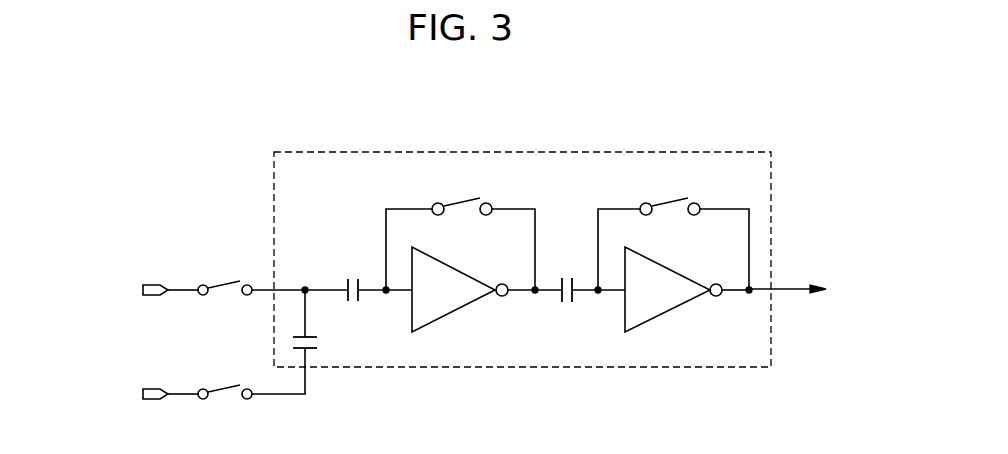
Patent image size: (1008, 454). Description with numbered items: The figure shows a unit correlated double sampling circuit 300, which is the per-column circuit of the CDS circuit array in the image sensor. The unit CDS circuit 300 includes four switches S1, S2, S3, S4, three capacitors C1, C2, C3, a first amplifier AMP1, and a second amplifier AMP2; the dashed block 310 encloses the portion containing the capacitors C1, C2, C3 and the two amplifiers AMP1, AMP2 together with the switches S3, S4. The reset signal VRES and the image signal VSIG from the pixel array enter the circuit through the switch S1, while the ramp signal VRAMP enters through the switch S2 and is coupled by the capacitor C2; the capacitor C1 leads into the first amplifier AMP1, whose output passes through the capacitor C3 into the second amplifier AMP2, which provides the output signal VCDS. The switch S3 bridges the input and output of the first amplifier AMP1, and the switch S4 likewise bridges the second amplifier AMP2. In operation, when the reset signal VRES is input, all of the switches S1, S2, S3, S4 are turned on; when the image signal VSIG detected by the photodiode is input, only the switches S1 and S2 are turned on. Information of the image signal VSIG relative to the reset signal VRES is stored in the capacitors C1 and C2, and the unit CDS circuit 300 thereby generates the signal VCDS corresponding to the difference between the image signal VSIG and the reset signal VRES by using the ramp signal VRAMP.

The unit CDS circuit 300 is at (887, 146).
The amplifier and sampling block 310 is at (520, 152).
The switch S1 is at (225, 274).
The switch S2 is at (225, 379).
The switch S3 is at (462, 194).
The switch S4 is at (670, 194).
The capacitor C1 is at (356, 277).
The capacitor C2 is at (322, 338).
The capacitor C3 is at (568, 304).
The first amplifier AMP1 is at (460, 289).
The second amplifier AMP2 is at (673, 289).